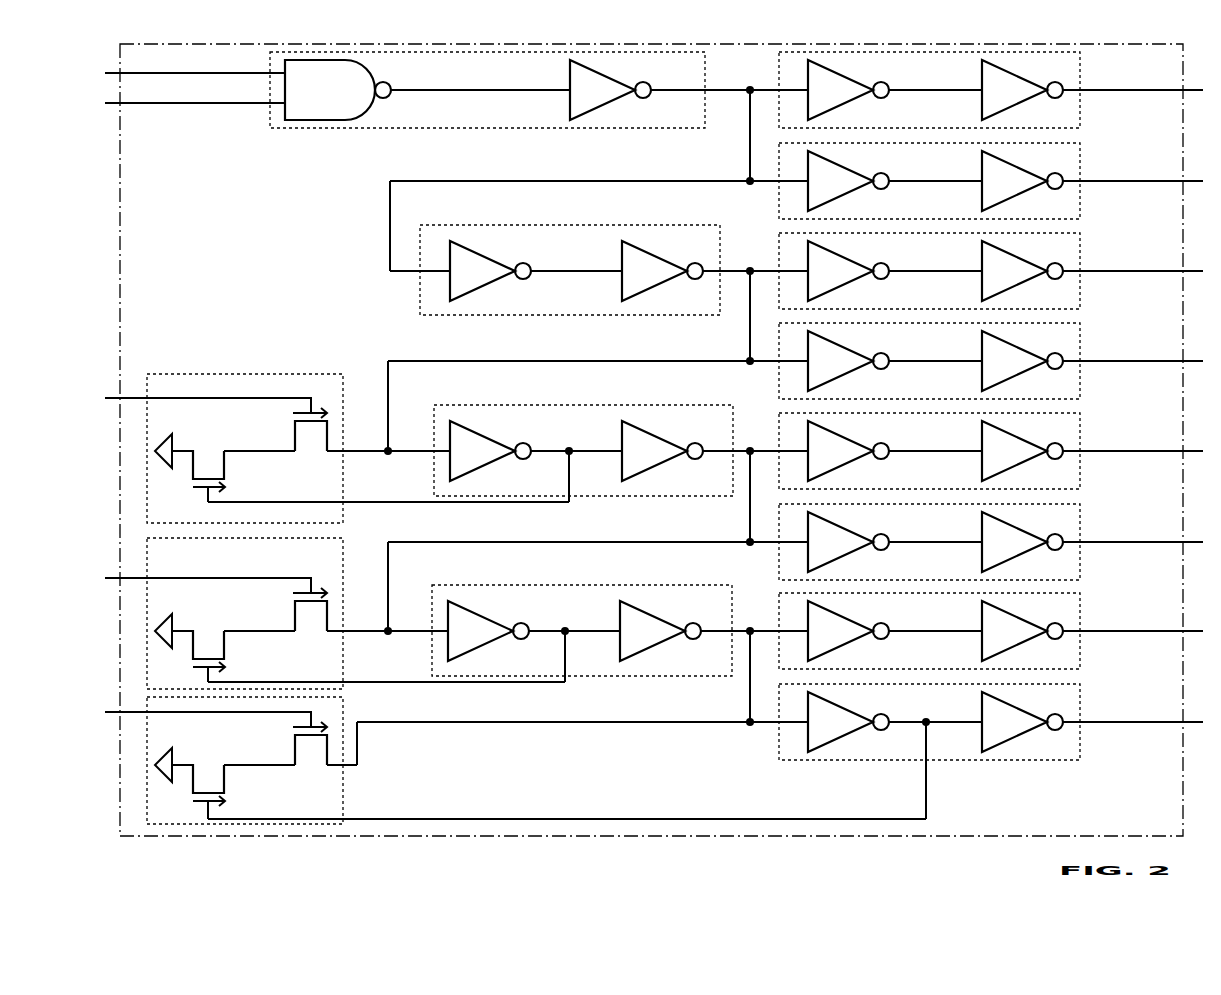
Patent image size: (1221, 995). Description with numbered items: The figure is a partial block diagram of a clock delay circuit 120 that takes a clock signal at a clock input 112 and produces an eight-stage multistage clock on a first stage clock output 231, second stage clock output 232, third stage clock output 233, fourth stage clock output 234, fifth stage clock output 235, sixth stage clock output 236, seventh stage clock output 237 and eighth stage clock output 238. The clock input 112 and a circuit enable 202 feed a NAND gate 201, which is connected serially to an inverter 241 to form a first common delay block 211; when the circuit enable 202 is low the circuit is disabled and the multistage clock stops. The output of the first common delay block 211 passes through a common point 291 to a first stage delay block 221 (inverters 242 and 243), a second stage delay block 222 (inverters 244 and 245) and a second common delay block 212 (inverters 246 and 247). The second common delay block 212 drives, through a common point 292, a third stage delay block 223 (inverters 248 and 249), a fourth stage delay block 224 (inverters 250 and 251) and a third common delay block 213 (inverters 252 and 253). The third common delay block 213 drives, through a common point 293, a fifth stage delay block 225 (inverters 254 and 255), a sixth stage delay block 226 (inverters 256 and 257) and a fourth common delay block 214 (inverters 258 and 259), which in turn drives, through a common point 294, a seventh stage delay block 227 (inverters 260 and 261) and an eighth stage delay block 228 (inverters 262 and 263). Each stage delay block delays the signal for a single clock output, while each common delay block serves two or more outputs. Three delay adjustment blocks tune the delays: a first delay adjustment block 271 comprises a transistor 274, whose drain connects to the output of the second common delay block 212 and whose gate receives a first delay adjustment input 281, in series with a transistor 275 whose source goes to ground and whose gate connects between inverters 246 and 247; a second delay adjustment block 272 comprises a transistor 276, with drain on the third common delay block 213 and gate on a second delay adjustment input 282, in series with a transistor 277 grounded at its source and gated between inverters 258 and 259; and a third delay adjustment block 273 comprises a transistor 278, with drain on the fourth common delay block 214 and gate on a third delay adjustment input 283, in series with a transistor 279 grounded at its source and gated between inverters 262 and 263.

The clock delay circuit 120 is at (651, 440).
The clock input 112 is at (195, 65).
The circuit enable 202 is at (195, 113).
The NAND gate 201 is at (338, 90).
The first common delay block 211 is at (487, 90).
The second common delay block 212 is at (570, 270).
The third common delay block 213 is at (583, 450).
The fourth common delay block 214 is at (582, 630).
The first stage delay block 221 is at (929, 90).
The second stage delay block 222 is at (929, 181).
The third stage delay block 223 is at (929, 271).
The fourth stage delay block 224 is at (929, 361).
The fifth stage delay block 225 is at (929, 451).
The sixth stage delay block 226 is at (929, 542).
The seventh stage delay block 227 is at (929, 631).
The eighth stage delay block 228 is at (929, 722).
The first stage clock output 231 is at (1133, 91).
The second stage clock output 232 is at (1133, 182).
The third stage clock output 233 is at (1133, 272).
The fourth stage clock output 234 is at (1133, 362).
The fifth stage clock output 235 is at (1133, 452).
The sixth stage clock output 236 is at (1133, 543).
The seventh stage clock output 237 is at (1133, 632).
The eighth stage clock output 238 is at (1133, 723).
The inverter 241 is at (610, 90).
The inverter 242 is at (848, 90).
The inverter 243 is at (1022, 90).
The inverter 244 is at (848, 181).
The inverter 245 is at (1022, 181).
The inverter 246 is at (490, 271).
The inverter 247 is at (662, 271).
The inverter 248 is at (848, 271).
The inverter 249 is at (1022, 271).
The inverter 250 is at (848, 361).
The inverter 251 is at (1022, 361).
The inverter 252 is at (490, 451).
The inverter 253 is at (662, 451).
The inverter 254 is at (848, 451).
The inverter 255 is at (1022, 451).
The inverter 256 is at (848, 542).
The inverter 257 is at (1022, 542).
The inverter 258 is at (488, 631).
The inverter 259 is at (660, 631).
The inverter 260 is at (848, 631).
The inverter 261 is at (1022, 631).
The inverter 262 is at (848, 722).
The inverter 263 is at (1022, 722).
The first delay adjustment block 271 is at (224, 448).
The second delay adjustment block 272 is at (224, 613).
The third delay adjustment block 273 is at (224, 760).
The transistor 274 is at (310, 429).
The transistor 275 is at (225, 468).
The transistor 276 is at (310, 609).
The transistor 277 is at (225, 648).
The transistor 278 is at (310, 743).
The transistor 279 is at (225, 783).
The first delay adjustment input 281 is at (208, 398).
The second delay adjustment input 282 is at (208, 578).
The third delay adjustment input 283 is at (208, 712).
The common point 291 is at (738, 77).
The common point 292 is at (752, 252).
The common point 293 is at (757, 431).
The common point 294 is at (755, 611).